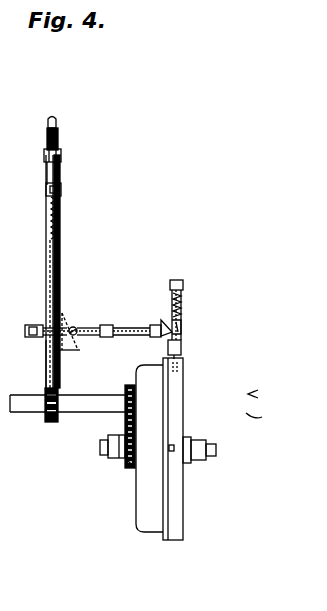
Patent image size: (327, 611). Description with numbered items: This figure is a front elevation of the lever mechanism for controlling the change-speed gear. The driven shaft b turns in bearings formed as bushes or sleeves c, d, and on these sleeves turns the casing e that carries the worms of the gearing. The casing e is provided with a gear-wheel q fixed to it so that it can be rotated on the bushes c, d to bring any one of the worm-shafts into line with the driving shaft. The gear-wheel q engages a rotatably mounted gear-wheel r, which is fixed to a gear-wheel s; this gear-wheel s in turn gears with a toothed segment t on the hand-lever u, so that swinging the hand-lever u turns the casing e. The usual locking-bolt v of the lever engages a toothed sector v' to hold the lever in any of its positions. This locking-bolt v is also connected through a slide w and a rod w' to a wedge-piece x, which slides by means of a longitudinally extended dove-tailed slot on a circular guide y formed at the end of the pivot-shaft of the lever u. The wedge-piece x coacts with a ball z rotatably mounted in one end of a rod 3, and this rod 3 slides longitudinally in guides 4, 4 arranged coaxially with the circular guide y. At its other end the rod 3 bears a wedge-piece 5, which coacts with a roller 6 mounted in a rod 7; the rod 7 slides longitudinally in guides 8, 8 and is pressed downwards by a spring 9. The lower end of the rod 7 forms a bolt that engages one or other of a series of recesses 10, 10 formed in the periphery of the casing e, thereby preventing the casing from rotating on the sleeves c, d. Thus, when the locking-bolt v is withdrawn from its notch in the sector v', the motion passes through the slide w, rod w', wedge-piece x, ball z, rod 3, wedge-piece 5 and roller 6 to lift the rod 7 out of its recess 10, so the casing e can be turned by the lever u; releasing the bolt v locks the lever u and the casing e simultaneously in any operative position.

The hand-lever u is at (46, 271).
The toothed segment t is at (46, 362).
The locking-bolt v is at (58, 140).
The toothed sector v' is at (32, 172).
The slide w is at (64, 188).
The rod w' is at (66, 292).
The guides 4 is at (108, 337).
The rod 3 is at (128, 328).
The wedge-piece x is at (80, 350).
The circular guide y is at (74, 327).
The ball z is at (77, 330).
The wedge-piece 5 is at (163, 321).
The rod 7 is at (182, 336).
The guides 8 is at (183, 284).
The spring 9 is at (182, 298).
The roller 6 is at (182, 326).
The casing e is at (159, 449).
The gear-wheel r is at (125, 386).
The gear-wheel s is at (51, 422).
The bush or sleeve c is at (112, 435).
The gear-wheel q is at (125, 465).
The bush or sleeve d is at (200, 440).
The driven shaft b is at (216, 450).
The recesses 10 is at (174, 447).